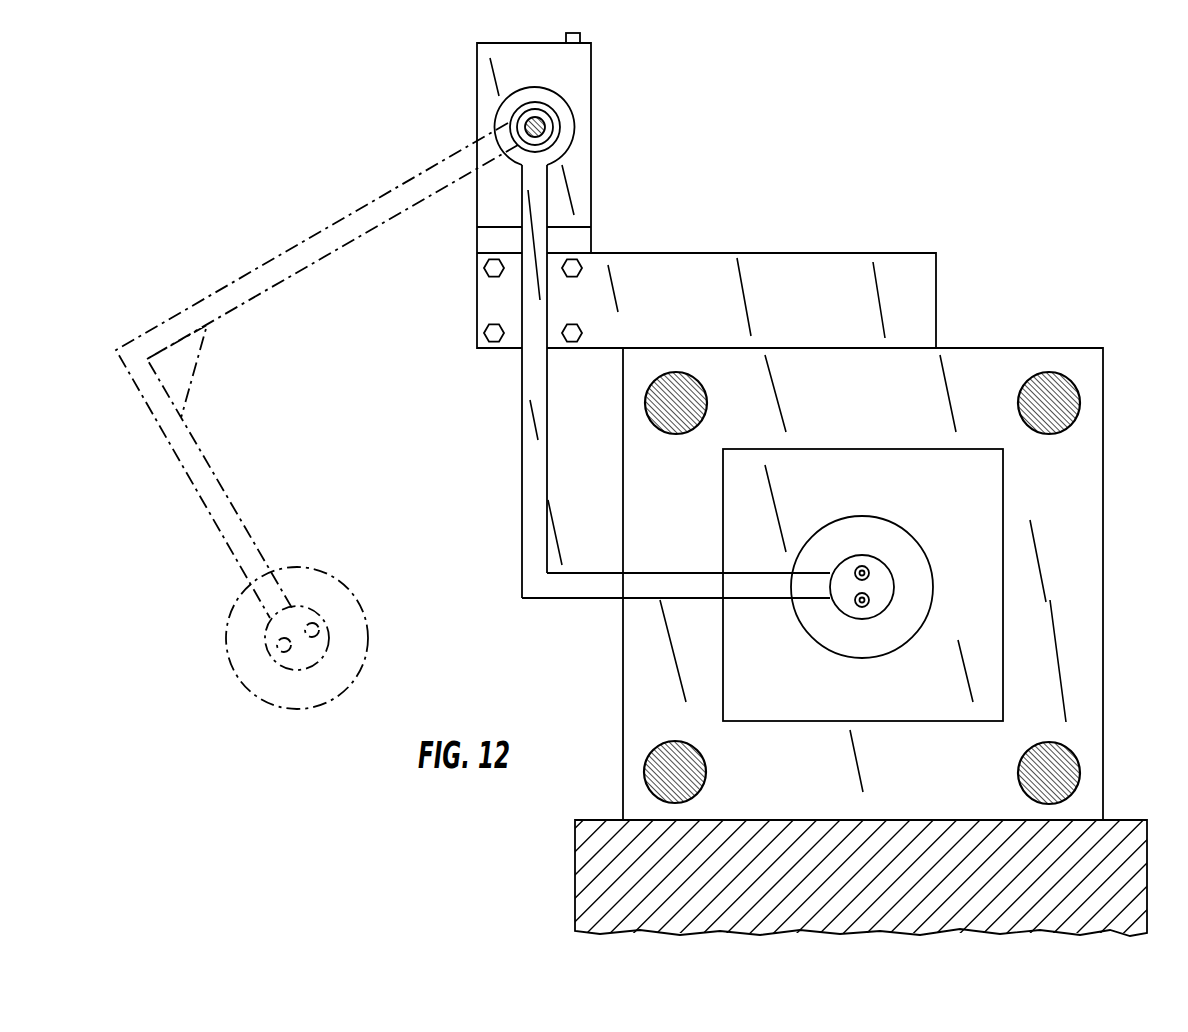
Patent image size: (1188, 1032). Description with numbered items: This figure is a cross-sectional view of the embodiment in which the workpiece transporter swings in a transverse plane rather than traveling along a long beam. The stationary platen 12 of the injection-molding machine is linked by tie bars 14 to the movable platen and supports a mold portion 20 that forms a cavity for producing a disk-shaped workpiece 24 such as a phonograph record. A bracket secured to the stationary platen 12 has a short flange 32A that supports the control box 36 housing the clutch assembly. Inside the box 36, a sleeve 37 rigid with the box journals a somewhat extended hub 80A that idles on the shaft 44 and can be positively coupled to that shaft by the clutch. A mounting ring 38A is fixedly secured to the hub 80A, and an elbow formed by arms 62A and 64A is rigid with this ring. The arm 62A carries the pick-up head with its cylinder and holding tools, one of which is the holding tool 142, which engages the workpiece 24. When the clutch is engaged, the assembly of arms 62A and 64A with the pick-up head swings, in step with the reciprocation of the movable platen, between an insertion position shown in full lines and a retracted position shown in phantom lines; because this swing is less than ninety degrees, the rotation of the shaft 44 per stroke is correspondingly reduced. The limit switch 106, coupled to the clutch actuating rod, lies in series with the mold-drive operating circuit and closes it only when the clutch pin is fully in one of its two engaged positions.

The stationary platen 12 is at (632, 668).
The tie bars 14 is at (1073, 398).
The mold portion 20 is at (985, 501).
The disk-shaped workpiece 24 is at (867, 522).
The flange 32A is at (792, 265).
The control box 36 is at (477, 60).
The sleeve 37 is at (535, 90).
The mounting ring 38A is at (562, 124).
The shaft 44 is at (517, 125).
The arm of elbow 62A is at (670, 575).
The arm of elbow 64A is at (533, 298).
The extended hub 80A is at (543, 137).
The limit switch 106 is at (582, 36).
The holding tool 142 is at (885, 590).